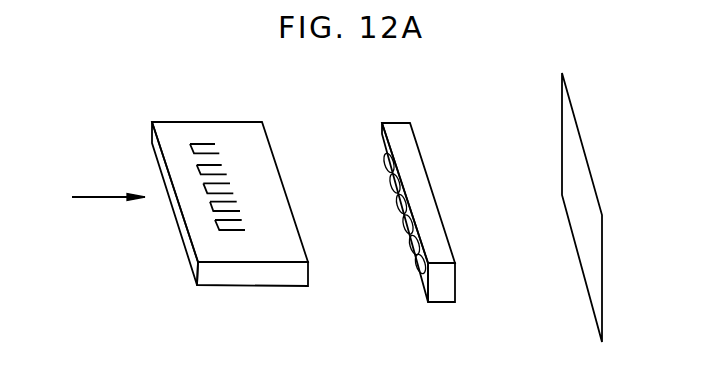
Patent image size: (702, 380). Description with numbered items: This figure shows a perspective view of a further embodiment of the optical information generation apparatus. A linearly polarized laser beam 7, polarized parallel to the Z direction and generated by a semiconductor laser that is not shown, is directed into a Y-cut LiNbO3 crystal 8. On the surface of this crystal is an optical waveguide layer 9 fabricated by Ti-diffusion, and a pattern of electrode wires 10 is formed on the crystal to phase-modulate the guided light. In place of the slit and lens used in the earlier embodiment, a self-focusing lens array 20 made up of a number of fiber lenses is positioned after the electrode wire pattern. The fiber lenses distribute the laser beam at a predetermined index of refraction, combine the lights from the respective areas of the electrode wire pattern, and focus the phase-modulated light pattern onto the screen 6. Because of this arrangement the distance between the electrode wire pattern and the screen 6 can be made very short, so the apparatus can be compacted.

The screen 6 is at (592, 278).
The linearly polarized laser beam 7 is at (92, 195).
The Y-cut LiNbO3 crystal 8 is at (185, 242).
The optical waveguide layer 9 is at (238, 262).
The electrode wires 10 is at (212, 142).
The self-focusing lens array 20 is at (440, 297).